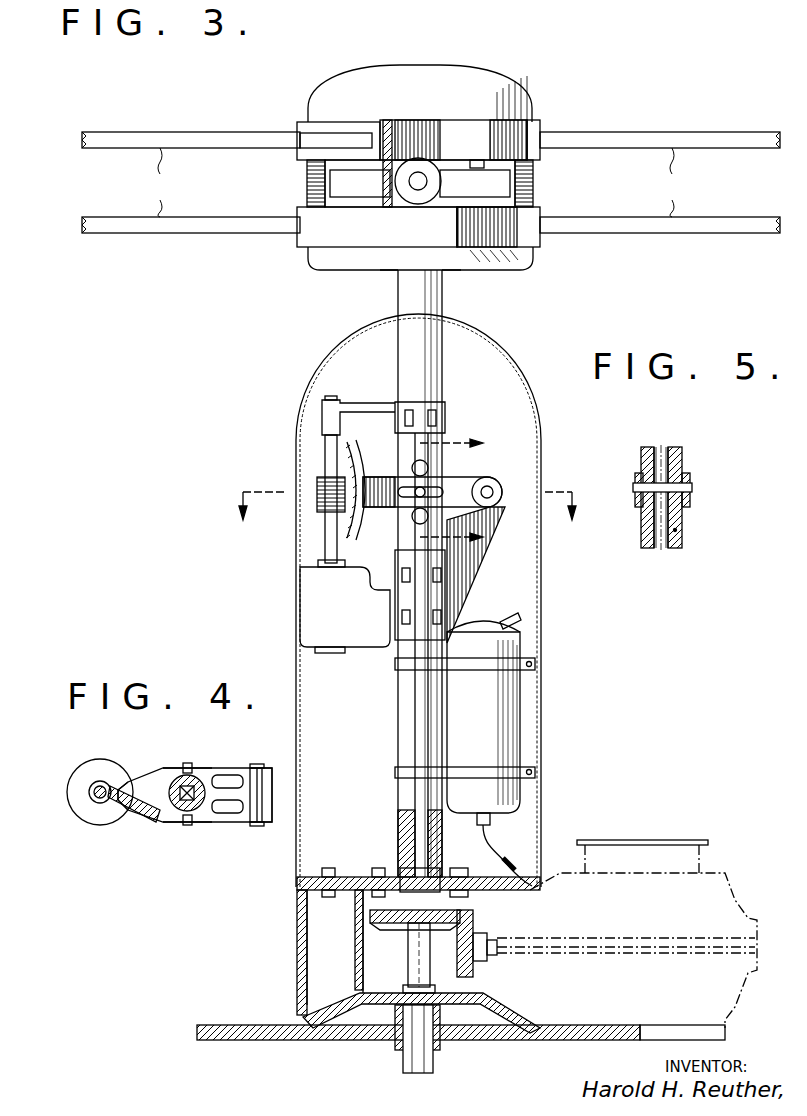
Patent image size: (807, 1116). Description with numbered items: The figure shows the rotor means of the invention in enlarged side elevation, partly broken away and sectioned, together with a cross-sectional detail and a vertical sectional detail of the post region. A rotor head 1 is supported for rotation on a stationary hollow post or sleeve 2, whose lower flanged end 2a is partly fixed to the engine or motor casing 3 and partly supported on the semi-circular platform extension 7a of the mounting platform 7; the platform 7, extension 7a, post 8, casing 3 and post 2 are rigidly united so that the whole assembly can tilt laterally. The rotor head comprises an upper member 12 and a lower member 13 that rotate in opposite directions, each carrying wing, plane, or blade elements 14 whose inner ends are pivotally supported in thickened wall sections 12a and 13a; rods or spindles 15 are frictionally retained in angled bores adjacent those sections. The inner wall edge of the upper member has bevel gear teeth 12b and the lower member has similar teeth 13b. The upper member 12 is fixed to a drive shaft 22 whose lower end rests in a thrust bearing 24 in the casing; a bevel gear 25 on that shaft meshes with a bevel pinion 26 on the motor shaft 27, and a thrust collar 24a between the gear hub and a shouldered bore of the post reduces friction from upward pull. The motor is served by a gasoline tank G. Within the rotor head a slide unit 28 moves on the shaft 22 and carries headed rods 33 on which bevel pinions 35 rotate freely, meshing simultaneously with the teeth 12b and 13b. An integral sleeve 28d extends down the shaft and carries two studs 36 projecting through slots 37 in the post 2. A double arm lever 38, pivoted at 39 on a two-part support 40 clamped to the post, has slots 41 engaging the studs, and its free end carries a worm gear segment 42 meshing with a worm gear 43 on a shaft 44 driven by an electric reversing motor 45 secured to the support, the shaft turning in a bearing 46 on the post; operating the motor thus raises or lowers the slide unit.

In FIG. 3, the rotor head 1 is at (535, 100).
In FIG. 3, the hollow post or sleeve 2 is at (423, 362).
In FIG. 4, the hollow post or sleeve 2 is at (210, 780).
In FIG. 5, the hollow post or sleeve 2 is at (683, 540).
In FIG. 3, the lower flanged end of post 2a is at (356, 880).
In FIG. 3, the engine or motor casing 3 is at (555, 877).
In FIG. 3, the mounting platform 7 is at (222, 1025).
In FIG. 3, the semi-circular platform extension 7a is at (300, 950).
In FIG. 3, the post 8 is at (412, 1065).
In FIG. 3, the upper rotating member 12 is at (355, 97).
In FIG. 3, the enlarged wall sections 12a is at (330, 125).
In FIG. 3, the bevel gear teeth 12b is at (482, 150).
In FIG. 3, the lower rotating member 13 is at (508, 268).
In FIG. 3, the enlargements 13a is at (540, 215).
In FIG. 3, the bevel gear teeth 13b is at (342, 222).
In FIG. 3, the wing, plane, or blade elements 14 is at (431, 182).
In FIG. 3, the circular rods or spindles 15 is at (400, 145).
In FIG. 3, the drive shaft 22 is at (418, 828).
In FIG. 4, the drive shaft 22 is at (150, 815).
In FIG. 5, the drive shaft 22 is at (660, 550).
In FIG. 3, the thrust bearing 24 is at (408, 960).
In FIG. 3, the thrust collar or anti-friction element 24a is at (422, 875).
In FIG. 3, the bevel gear 25 is at (360, 920).
In FIG. 3, the bevel pinion 26 is at (470, 920).
In FIG. 3, the motor shaft 27 is at (490, 960).
In FIG. 3, the slide unit 28 is at (386, 160).
In FIG. 4, the sleeve 28d is at (193, 826).
In FIG. 5, the sleeve 28d is at (683, 531).
In FIG. 3, the headed rod 33 is at (535, 185).
In FIG. 3, the bevel pinions 35 is at (535, 170).
In FIG. 3, the studs 36 is at (415, 498).
In FIG. 4, the studs 36 is at (190, 762).
In FIG. 5, the studs 36 is at (638, 486).
In FIG. 5, the slots 37 is at (645, 520).
In FIG. 3, the double arm yoke or lever 38 is at (470, 472).
In FIG. 4, the double arm yoke or lever 38 is at (262, 822).
In FIG. 5, the double arm yoke or lever 38 is at (637, 500).
In FIG. 3, the pivot 39 is at (492, 488).
In FIG. 4, the pivot 39 is at (258, 766).
In FIG. 3, the two-part support 40 is at (460, 583).
In FIG. 4, the two-part support 40 is at (270, 824).
In FIG. 3, the slot 41 is at (545, 628).
In FIG. 4, the slot 41 is at (182, 819).
In FIG. 3, the worm gear segment 42 is at (350, 466).
In FIG. 4, the worm gear segment 42 is at (122, 822).
In FIG. 3, the worm gear 43 is at (317, 488).
In FIG. 4, the worm gear 43 is at (97, 812).
In FIG. 3, the shaft 44 is at (330, 535).
In FIG. 4, the shaft 44 is at (92, 790).
In FIG. 3, the electric reversing type motor 45 is at (312, 605).
In FIG. 4, the electric reversing type motor 45 is at (92, 776).
In FIG. 3, the bearing 46 is at (322, 412).
In FIG. 3, the gasoline tank G is at (510, 715).